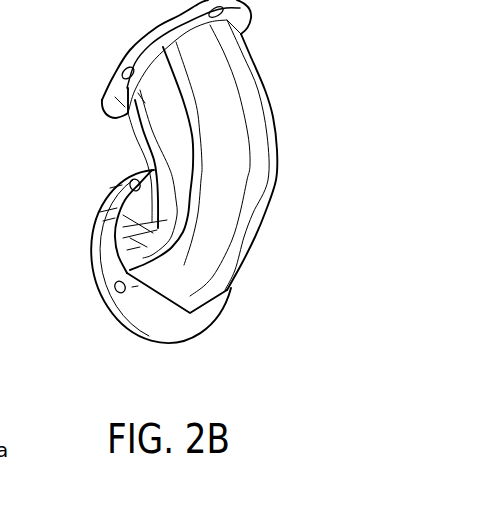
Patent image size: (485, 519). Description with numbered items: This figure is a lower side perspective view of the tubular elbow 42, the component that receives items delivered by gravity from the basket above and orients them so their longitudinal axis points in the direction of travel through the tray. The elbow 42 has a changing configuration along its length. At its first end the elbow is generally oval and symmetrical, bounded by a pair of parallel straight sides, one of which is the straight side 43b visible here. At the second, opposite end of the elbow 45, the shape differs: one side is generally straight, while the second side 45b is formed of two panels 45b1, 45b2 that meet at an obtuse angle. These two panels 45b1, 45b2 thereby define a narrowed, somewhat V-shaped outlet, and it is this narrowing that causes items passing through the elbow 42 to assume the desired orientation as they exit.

The tubular elbow 42 is at (303, 103).
The straight side 43b is at (158, 97).
The second end of the elbow 45 is at (165, 292).
The second side 45b is at (117, 283).
The panel 45b1 is at (130, 231).
The panel 45b2 is at (198, 293).